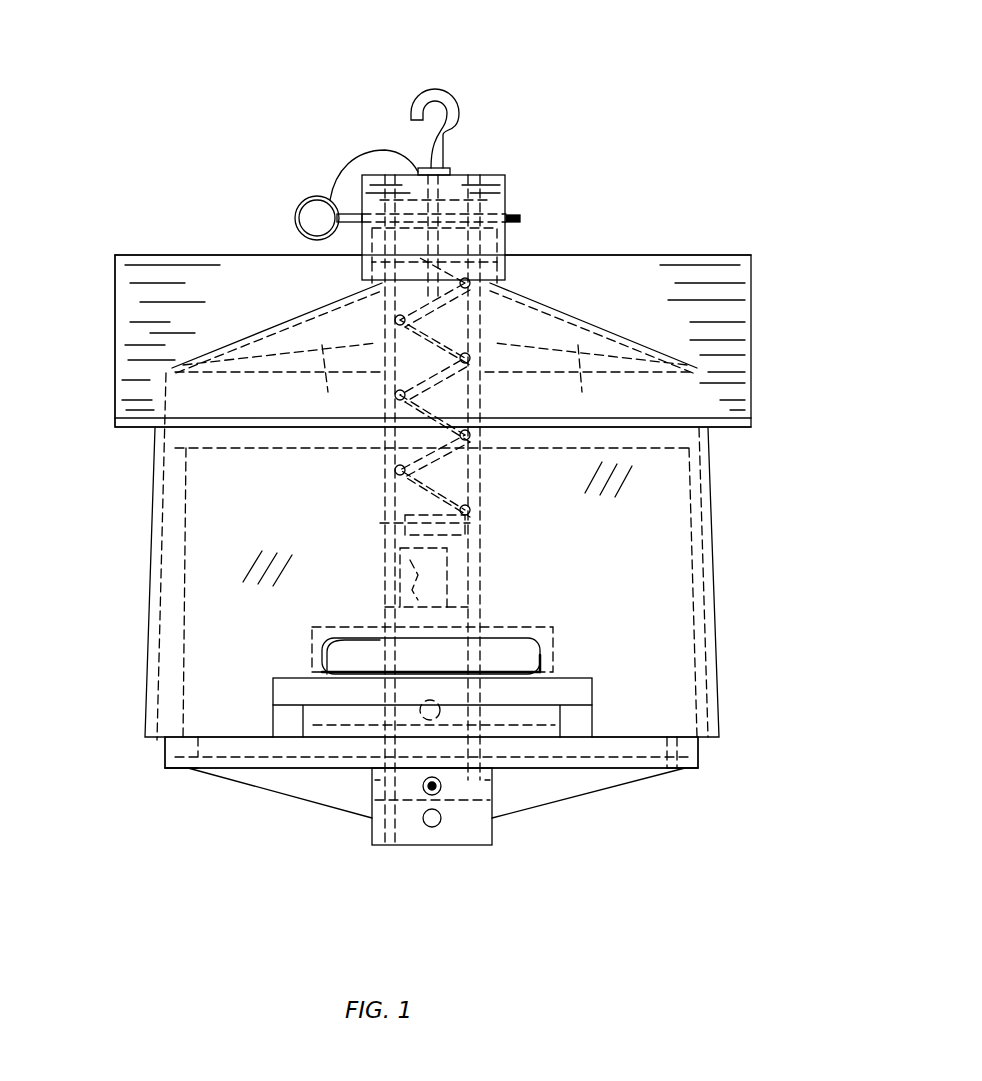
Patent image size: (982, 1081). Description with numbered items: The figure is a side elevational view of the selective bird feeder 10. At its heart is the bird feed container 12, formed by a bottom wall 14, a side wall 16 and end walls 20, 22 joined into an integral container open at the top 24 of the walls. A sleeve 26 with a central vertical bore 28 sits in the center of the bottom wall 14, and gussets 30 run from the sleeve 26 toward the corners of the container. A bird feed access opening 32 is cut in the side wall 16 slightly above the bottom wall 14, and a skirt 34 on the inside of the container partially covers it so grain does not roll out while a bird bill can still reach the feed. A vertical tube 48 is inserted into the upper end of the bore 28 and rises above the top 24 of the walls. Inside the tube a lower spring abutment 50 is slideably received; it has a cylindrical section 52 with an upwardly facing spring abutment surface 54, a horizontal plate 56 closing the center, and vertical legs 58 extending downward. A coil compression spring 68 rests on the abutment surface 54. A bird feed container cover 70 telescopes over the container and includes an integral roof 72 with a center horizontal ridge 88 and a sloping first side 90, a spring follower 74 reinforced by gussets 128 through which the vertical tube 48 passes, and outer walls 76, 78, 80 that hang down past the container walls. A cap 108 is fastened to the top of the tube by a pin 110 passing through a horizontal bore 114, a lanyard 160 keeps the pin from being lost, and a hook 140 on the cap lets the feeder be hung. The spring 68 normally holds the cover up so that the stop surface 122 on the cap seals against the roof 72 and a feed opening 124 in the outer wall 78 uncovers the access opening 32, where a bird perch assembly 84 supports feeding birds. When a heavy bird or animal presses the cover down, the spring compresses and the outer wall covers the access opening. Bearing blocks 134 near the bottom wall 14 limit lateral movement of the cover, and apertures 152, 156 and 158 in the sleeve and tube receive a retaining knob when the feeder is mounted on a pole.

The bird feeder 10 is at (628, 228).
The bird feed container 12 is at (607, 810).
The bottom wall 14 is at (302, 755).
The side wall 16 is at (250, 752).
The end wall 20 is at (703, 625).
The end wall 22 is at (163, 629).
The top of the side walls and end walls 24 is at (712, 443).
The sleeve 26 is at (375, 832).
The central vertical bore 28 is at (420, 850).
The gussets 30 is at (338, 799).
The bird feed access opening 32 is at (483, 638).
The skirt 34 is at (530, 641).
The vertical tube 48 is at (490, 473).
The lower spring abutment 50 is at (385, 572).
The cylindrical section 52 is at (400, 545).
The spring abutment surface 54 is at (385, 520).
The horizontal plate 56 is at (478, 540).
The vertical legs 58 is at (390, 605).
The coil compression spring 68 is at (385, 498).
The bird feed container cover 70 is at (200, 232).
The roof 72 is at (283, 268).
The spring follower 74 is at (520, 294).
The outer wall 76 is at (151, 567).
The outer wall 78 is at (652, 505).
The outer wall 80 is at (718, 578).
The bird perch assembly 84 is at (590, 710).
The center horizontal ridge 88 is at (143, 253).
The first side of the roof 90 is at (752, 316).
The cap 108 is at (458, 182).
The pin 110 is at (520, 217).
The horizontal bore 114 is at (490, 215).
The stop surface 122 is at (328, 295).
The feed opening 124 is at (325, 648).
The gussets 128 is at (325, 392).
The bearing blocks 134 is at (178, 768).
The hook 140 is at (415, 112).
The aperture 152 is at (437, 828).
The aperture 156 is at (442, 791).
The aperture 158 is at (555, 660).
The lanyard 160 is at (372, 150).